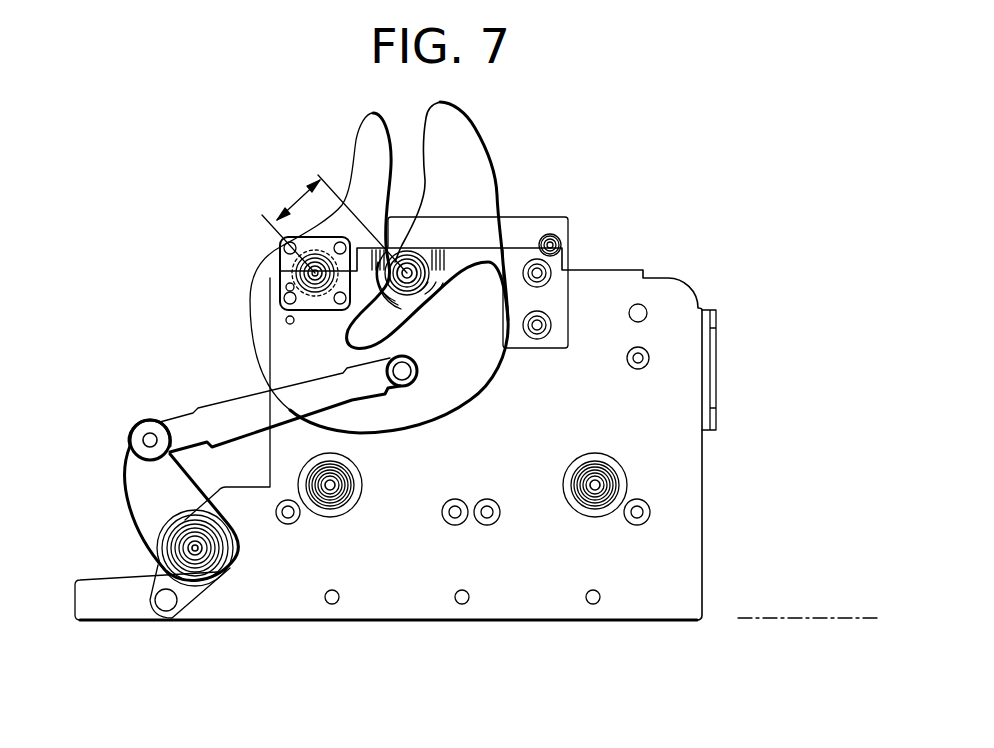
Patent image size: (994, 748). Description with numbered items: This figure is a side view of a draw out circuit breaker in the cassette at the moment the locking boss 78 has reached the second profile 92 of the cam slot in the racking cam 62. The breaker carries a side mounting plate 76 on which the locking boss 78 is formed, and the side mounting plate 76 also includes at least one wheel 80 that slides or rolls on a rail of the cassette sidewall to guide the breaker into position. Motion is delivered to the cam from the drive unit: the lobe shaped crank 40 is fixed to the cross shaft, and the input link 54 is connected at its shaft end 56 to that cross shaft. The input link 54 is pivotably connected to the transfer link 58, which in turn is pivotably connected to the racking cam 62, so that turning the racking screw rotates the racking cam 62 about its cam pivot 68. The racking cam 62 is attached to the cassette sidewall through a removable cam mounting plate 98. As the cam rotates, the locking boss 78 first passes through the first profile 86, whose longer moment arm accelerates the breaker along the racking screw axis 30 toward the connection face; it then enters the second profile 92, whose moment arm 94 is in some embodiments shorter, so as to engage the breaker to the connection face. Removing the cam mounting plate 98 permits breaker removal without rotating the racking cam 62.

The racking screw axis 30 is at (808, 618).
The lobe shaped crank 40 is at (156, 583).
The input link 54 is at (145, 500).
The shaft end 56 is at (203, 556).
The transfer link 58 is at (227, 408).
The racking cam 62 is at (330, 352).
The cam pivot 68 is at (310, 276).
The side mounting plate 76 is at (496, 600).
The locking boss 78 is at (402, 297).
The wheel 80 is at (333, 485).
The first profile 86 is at (433, 150).
The second profile 92 is at (428, 238).
The moment arm 94 is at (334, 222).
The cam mounting plate 98 is at (283, 314).